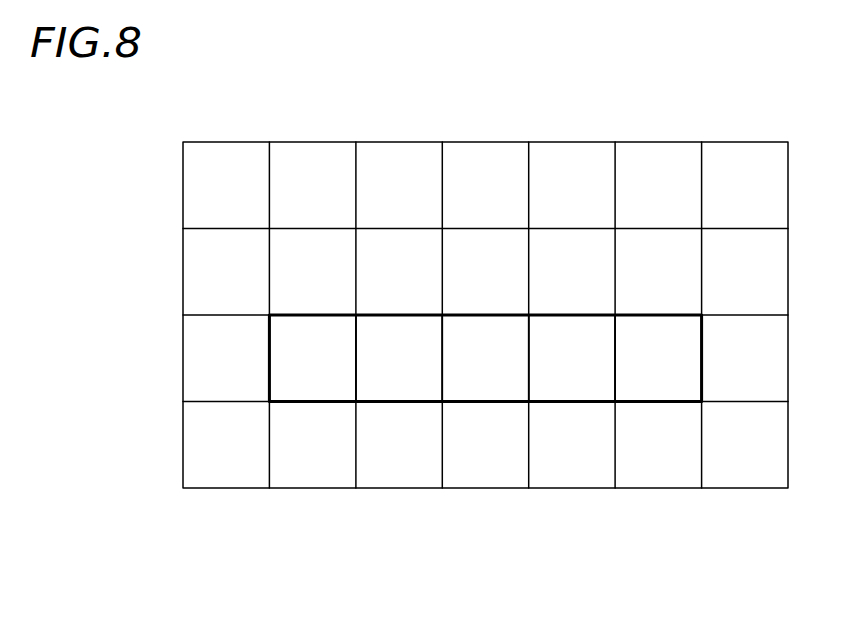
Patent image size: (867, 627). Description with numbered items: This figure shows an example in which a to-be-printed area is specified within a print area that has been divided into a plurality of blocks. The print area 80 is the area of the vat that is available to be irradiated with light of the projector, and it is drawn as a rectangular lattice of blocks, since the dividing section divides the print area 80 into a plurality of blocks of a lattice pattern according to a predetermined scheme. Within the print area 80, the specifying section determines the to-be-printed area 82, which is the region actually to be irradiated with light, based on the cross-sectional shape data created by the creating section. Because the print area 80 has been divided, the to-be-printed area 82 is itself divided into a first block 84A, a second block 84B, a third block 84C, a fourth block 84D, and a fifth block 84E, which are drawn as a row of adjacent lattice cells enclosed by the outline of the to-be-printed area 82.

The print area 80 is at (168, 436).
The to-be-printed area 82 is at (416, 418).
The first block 84A is at (317, 340).
The second block 84B is at (404, 340).
The third block 84C is at (490, 340).
The fourth block 84D is at (577, 340).
The fifth block 84E is at (664, 340).